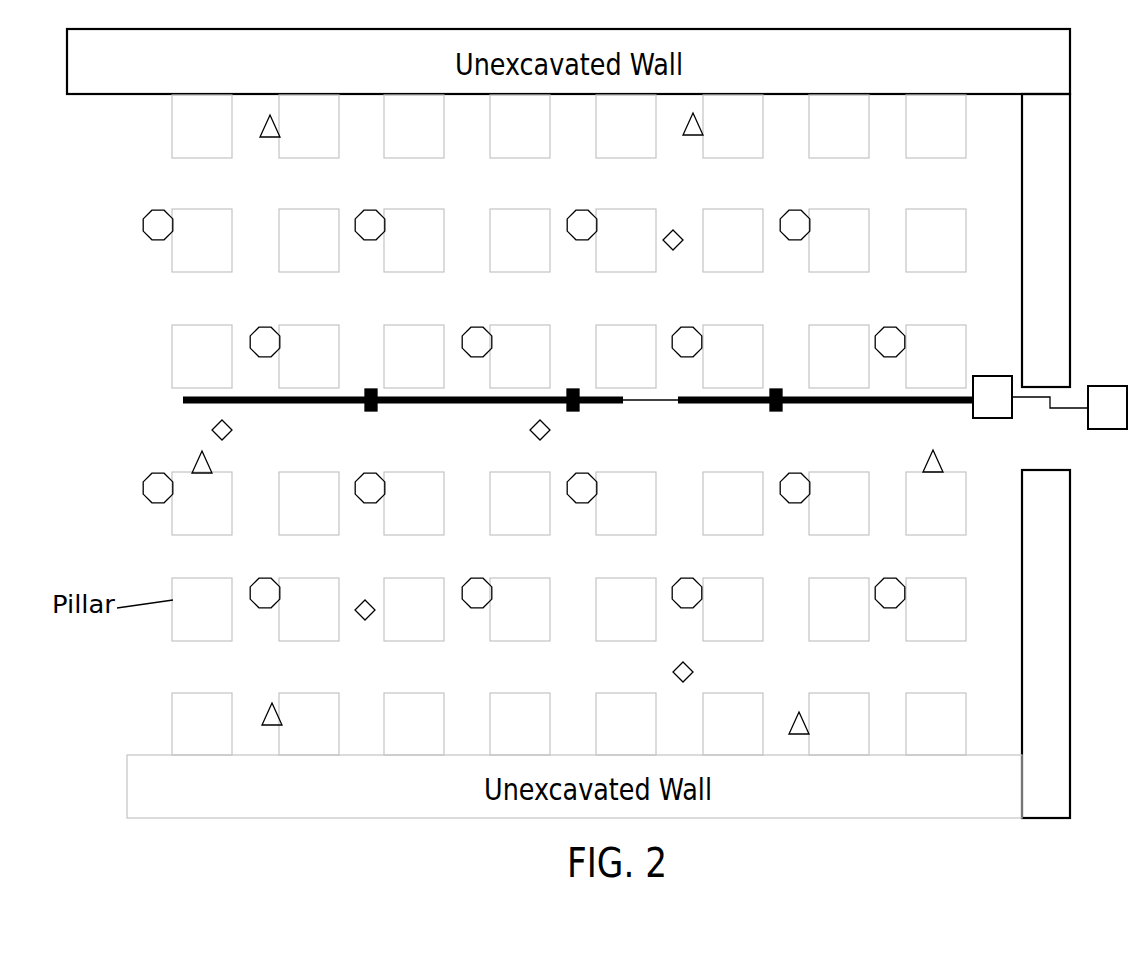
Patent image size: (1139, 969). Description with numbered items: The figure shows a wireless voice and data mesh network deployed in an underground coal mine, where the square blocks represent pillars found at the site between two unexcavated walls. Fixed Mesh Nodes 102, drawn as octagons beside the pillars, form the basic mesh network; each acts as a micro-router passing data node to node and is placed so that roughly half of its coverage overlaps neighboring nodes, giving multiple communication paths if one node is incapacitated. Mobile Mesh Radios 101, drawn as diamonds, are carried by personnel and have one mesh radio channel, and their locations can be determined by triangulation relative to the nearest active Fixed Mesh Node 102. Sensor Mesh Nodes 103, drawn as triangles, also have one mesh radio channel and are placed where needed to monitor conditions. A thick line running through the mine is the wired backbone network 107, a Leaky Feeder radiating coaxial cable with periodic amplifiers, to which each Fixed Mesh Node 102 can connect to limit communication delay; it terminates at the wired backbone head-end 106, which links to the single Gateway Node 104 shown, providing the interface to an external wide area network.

The mobile mesh radio 101 is at (674, 253).
The fixed mesh node 102 is at (146, 253).
The sensor mesh node 103 is at (270, 147).
The gateway node 104 is at (1098, 375).
The wired backbone head-end 106 is at (1002, 429).
The wired backbone network 107 is at (617, 408).